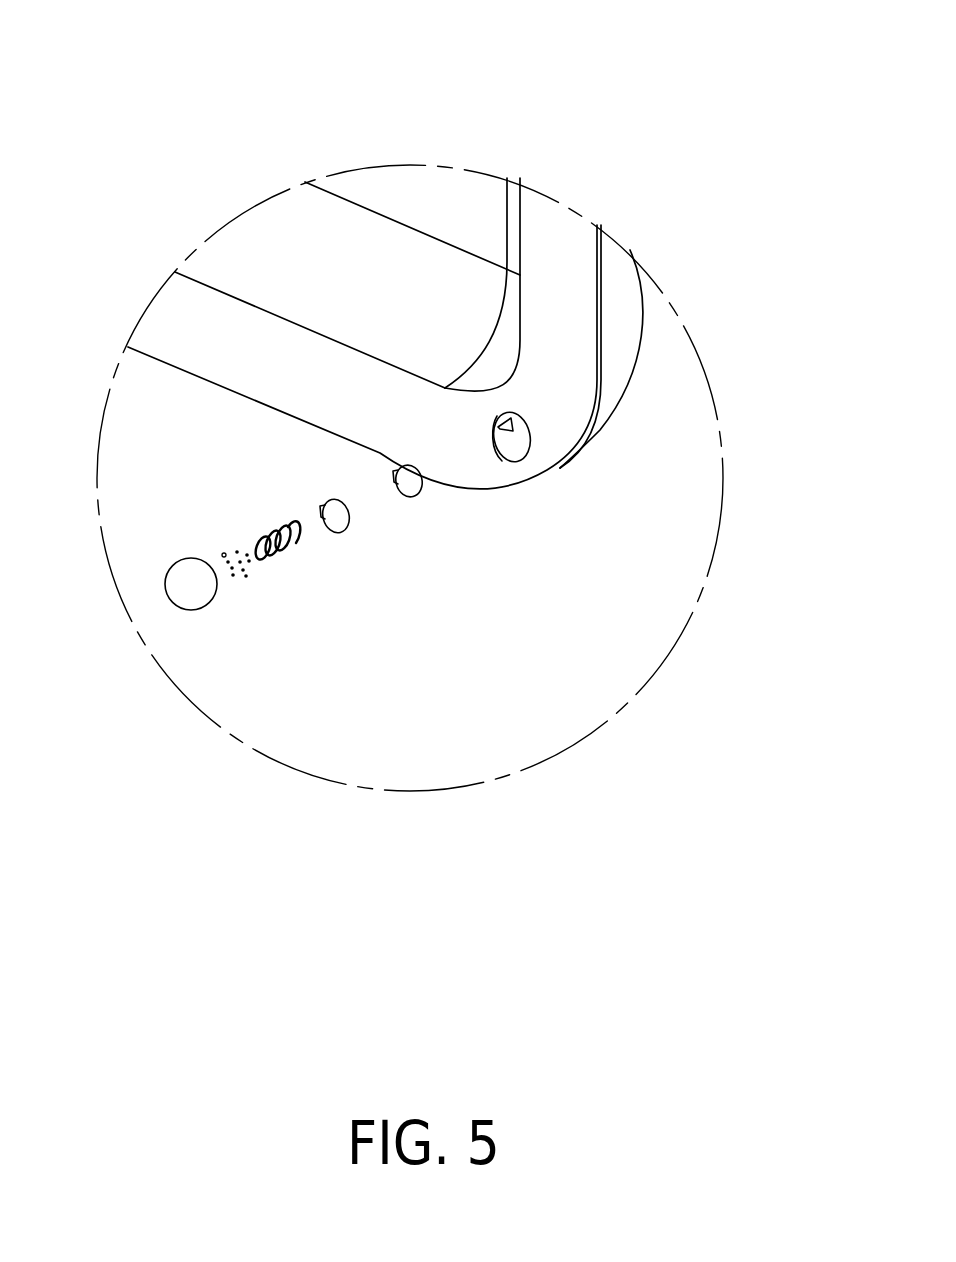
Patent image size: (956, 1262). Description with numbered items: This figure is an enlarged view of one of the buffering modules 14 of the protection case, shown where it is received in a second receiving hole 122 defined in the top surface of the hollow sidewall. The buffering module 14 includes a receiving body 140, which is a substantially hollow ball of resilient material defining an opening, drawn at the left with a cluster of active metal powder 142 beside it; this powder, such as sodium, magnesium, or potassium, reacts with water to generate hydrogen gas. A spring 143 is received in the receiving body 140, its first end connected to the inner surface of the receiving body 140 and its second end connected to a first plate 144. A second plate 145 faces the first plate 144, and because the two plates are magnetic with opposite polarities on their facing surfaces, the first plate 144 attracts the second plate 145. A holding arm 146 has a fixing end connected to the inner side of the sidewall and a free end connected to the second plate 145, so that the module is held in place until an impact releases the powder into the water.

The buffering module 14 is at (420, 36).
The second receiving hole 122 is at (523, 433).
The holding arm 146 is at (512, 417).
The second plate 145 is at (410, 487).
The first plate 144 is at (338, 522).
The spring 143 is at (278, 553).
The active metal powder 142 is at (223, 555).
The receiving body 140 is at (177, 580).